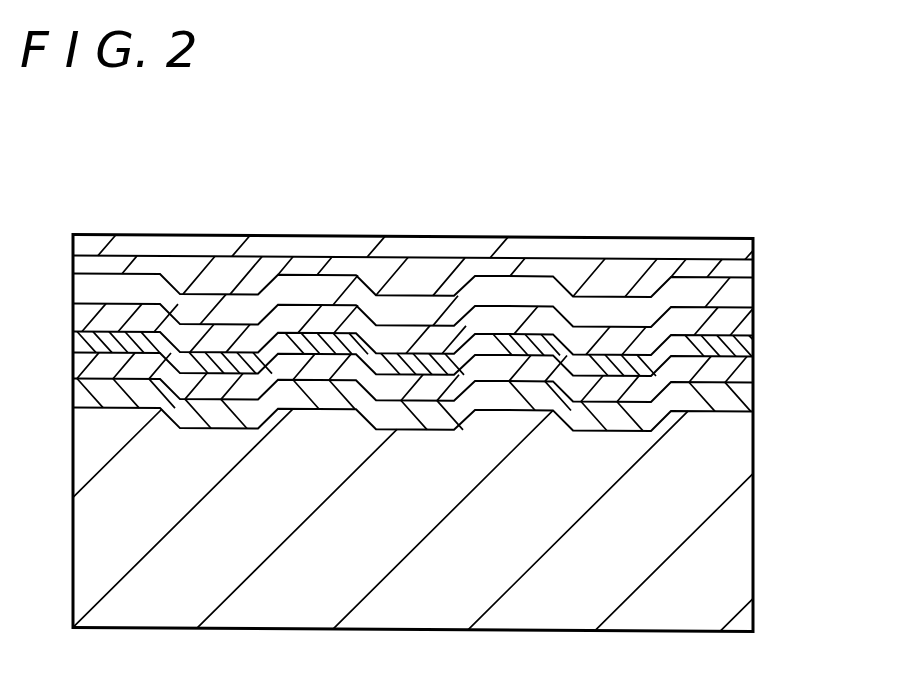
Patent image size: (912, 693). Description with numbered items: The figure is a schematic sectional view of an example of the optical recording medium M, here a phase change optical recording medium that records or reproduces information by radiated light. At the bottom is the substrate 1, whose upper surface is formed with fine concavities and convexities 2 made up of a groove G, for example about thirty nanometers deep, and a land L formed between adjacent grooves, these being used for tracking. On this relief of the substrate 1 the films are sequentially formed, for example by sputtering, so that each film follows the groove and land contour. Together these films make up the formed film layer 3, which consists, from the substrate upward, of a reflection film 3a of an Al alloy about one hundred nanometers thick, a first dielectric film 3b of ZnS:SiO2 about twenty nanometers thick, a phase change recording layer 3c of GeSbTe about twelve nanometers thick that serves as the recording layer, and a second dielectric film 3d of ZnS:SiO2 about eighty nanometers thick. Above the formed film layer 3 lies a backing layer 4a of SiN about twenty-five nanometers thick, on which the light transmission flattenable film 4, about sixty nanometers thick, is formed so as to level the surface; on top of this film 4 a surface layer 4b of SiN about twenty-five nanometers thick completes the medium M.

The substrate 1 is at (583, 612).
The fine concavities and convexities 2 is at (252, 276).
The formed film layer 3 is at (469, 344).
The reflection film 3a is at (448, 415).
The first dielectric film 3b is at (748, 372).
The phase change recording layer 3c is at (745, 347).
The second dielectric film 3d is at (740, 318).
The light transmission flattenable film 4 is at (608, 275).
The backing layer 4a is at (615, 315).
The surface layer 4b is at (583, 247).
The groove G is at (207, 430).
The land L is at (306, 410).
The optical recording medium M is at (812, 662).